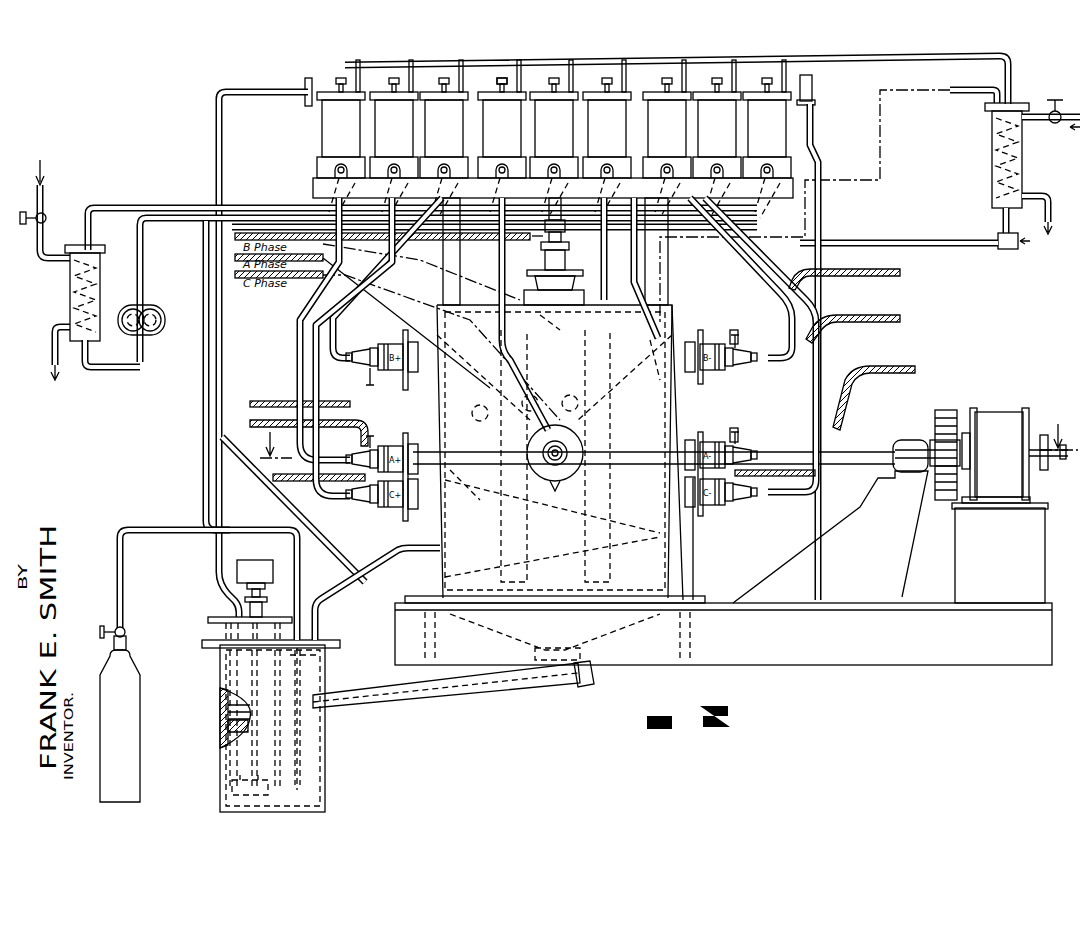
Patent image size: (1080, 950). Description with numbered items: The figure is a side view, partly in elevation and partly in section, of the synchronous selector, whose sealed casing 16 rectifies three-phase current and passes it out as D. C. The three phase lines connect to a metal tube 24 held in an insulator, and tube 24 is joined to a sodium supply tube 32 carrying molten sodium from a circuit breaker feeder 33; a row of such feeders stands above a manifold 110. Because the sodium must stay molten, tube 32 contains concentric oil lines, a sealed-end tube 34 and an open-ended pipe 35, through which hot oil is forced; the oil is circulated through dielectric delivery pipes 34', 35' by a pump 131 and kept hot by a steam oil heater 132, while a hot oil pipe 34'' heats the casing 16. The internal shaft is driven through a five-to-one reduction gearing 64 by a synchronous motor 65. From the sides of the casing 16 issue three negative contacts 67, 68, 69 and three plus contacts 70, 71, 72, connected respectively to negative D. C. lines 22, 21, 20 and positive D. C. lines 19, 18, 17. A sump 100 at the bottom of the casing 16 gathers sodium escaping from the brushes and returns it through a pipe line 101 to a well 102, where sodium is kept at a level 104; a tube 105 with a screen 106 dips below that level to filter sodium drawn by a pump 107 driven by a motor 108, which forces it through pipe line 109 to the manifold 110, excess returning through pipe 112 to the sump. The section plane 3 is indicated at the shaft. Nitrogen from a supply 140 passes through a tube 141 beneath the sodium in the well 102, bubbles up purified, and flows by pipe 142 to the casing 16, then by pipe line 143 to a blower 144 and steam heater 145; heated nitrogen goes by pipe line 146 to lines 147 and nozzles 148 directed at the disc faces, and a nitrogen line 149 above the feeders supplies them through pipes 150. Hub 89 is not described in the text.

The section line 3- 3 is at (665, 438).
The synchronous selector casing 16 is at (676, 416).
The positive D. C. phase line 17 is at (332, 483).
The positive D. C. phase line 18 is at (282, 402).
The positive D. C. phase line 19 is at (362, 422).
The negative D. C. current line 20 is at (768, 492).
The negative D. C. current line 21 is at (745, 318).
The negative D. C. current line 22 is at (757, 412).
The metal tube 24 is at (590, 453).
The sodium supply tube 32 is at (575, 398).
The circuit breaker feeder 33 is at (352, 131).
The hot oil tube 34 is at (532, 191).
The hot oil pipe 35 is at (534, 195).
The dielectric oil delivery pipe 34' is at (448, 290).
The dielectric oil delivery pipe 35' is at (422, 216).
The hot oil pipe 34'' is at (285, 401).
The reduction gearing 64 is at (946, 410).
The synchronous motor 65 is at (997, 410).
The negative contact 67 is at (718, 440).
The negative contact 68 is at (708, 372).
The negative contact 69 is at (714, 508).
The plus contact 70 is at (396, 446).
The plus contact 71 is at (392, 372).
The plus contact 72 is at (390, 507).
The hub 89 is at (528, 450).
The sump 100 is at (583, 630).
The pipe line 101 is at (466, 697).
The well 102 is at (327, 740).
The sodium level 104 is at (236, 728).
The tube 105 is at (228, 738).
The screen 106 is at (222, 697).
The pump 107 is at (232, 790).
The motor 108 is at (269, 580).
The pipe line 109 is at (262, 80).
The manifold 110 is at (479, 90).
The pipe 112 is at (816, 122).
The pump 131 is at (158, 308).
The steam oil heater 132 is at (100, 278).
The nitrogen supply 140 is at (132, 712).
The tube 141 is at (120, 590).
The pipe 142 is at (326, 592).
The pipe line 143 is at (848, 240).
The blower 144 is at (1007, 249).
The steam heater 145 is at (990, 155).
The pipe line 146 is at (885, 136).
The lines 147 is at (668, 370).
The nozzles 148 is at (535, 395).
The nitrogen line 149 is at (665, 56).
The pipes 150 is at (340, 74).